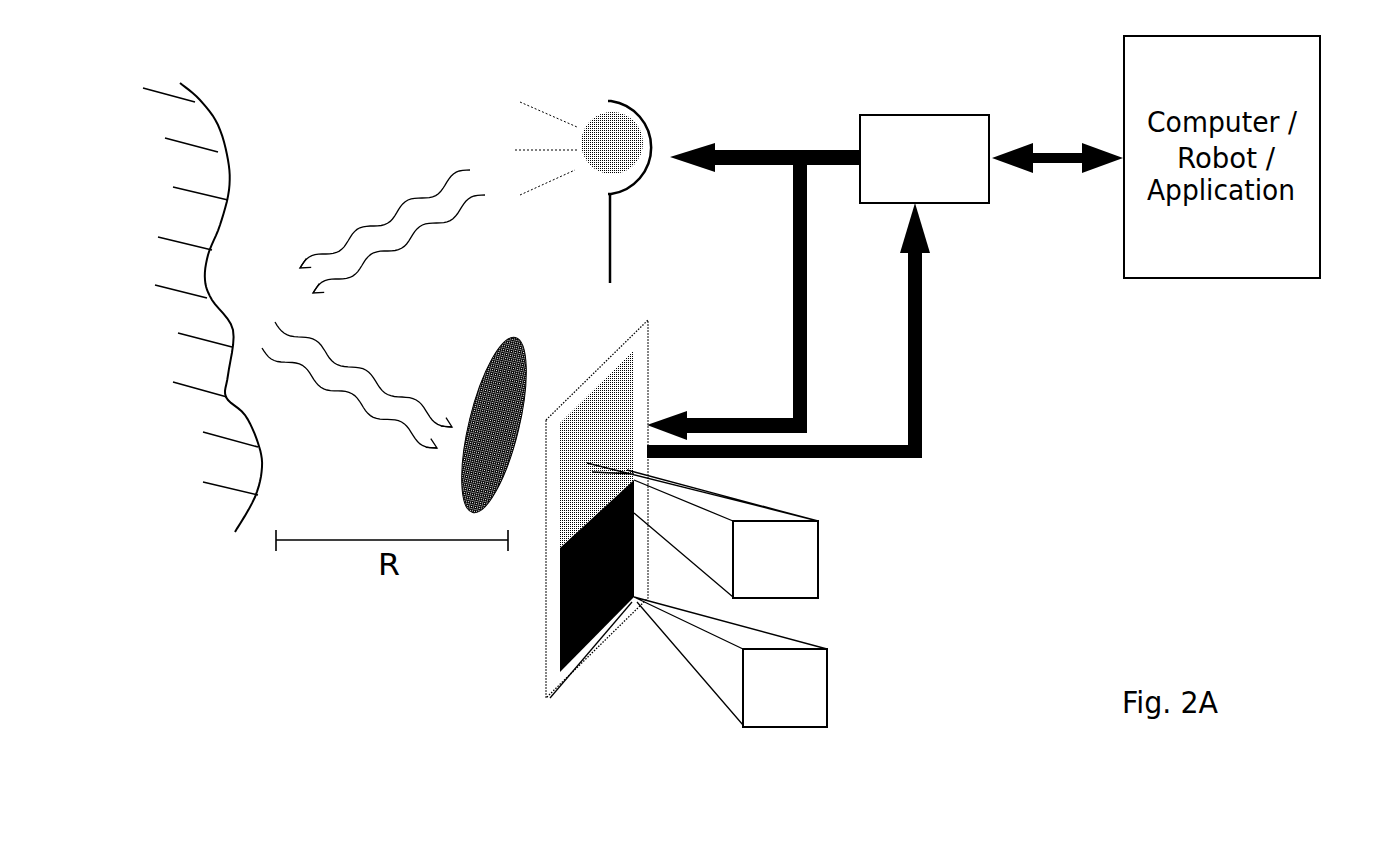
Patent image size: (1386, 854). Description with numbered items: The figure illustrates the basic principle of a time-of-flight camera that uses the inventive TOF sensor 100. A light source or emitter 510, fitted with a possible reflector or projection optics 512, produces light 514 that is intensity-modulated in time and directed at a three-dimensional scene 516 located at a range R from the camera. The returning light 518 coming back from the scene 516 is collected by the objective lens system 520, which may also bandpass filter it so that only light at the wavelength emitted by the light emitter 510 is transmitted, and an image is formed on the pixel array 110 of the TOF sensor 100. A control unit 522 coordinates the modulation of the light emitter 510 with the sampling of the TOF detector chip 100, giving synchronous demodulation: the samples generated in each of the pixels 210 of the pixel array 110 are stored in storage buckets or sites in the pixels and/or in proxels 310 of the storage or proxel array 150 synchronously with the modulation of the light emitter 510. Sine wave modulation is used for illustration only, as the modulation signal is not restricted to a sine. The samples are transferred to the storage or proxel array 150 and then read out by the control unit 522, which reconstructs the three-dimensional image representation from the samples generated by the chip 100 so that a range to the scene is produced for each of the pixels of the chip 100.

The TOF sensor 100 is at (548, 680).
The pixel array 110 is at (634, 447).
The storage or proxel array 150 is at (558, 575).
The pixel 210 is at (818, 558).
The proxel 310 is at (827, 690).
The light source or emitter 510 is at (597, 110).
The reflector or projection optics 512 is at (650, 105).
The light 514 is at (403, 220).
The 3-D scene 516 is at (202, 307).
The returning light 518 is at (355, 385).
The objective lens system 520 is at (525, 355).
The control unit 522 is at (915, 197).